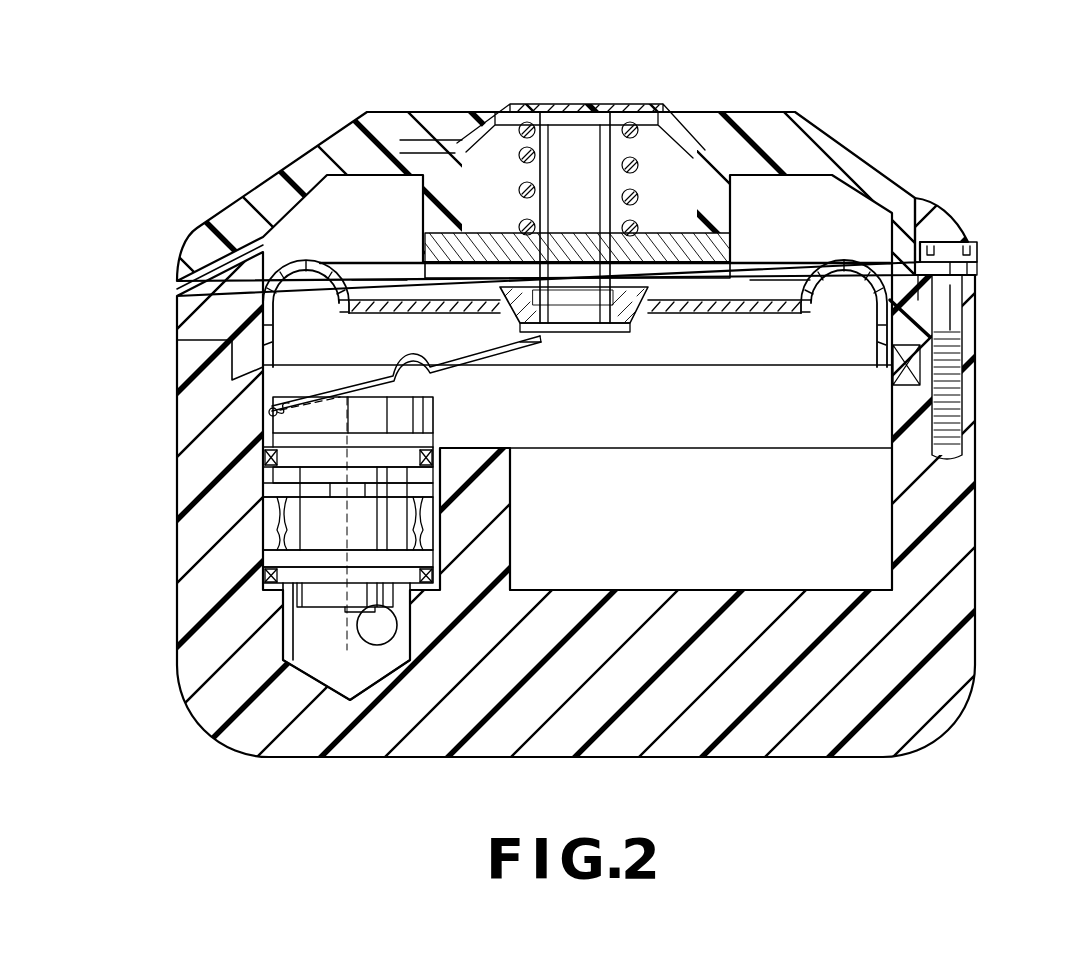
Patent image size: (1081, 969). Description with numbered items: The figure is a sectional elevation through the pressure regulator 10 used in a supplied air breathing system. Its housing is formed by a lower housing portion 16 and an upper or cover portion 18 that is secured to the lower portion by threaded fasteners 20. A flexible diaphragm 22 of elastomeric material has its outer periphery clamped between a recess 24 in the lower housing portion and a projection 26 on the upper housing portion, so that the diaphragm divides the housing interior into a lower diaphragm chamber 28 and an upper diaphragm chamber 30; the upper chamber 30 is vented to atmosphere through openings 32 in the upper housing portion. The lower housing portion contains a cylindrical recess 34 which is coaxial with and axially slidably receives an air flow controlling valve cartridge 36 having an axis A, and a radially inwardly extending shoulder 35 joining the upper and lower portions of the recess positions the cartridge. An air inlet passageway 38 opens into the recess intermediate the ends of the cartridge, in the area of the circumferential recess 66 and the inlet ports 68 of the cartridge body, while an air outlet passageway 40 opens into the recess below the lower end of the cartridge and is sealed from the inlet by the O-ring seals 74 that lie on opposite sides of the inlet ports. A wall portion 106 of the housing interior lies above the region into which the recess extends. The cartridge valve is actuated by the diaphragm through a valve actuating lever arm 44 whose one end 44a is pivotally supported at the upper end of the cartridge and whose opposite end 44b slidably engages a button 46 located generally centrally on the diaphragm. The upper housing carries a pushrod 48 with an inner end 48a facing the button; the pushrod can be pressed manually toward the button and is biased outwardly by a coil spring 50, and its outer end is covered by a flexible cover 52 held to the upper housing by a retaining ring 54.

The pressure regulator 10 is at (948, 128).
The lower housing portion 16 is at (168, 650).
The upper or cover portion 18 is at (210, 185).
The threaded fasteners 20 is at (975, 243).
The flexible diaphragm 22 is at (762, 255).
The recess 24 is at (905, 368).
The projection 26 is at (932, 330).
The lower diaphragm chamber 28 is at (826, 531).
The upper diaphragm chamber 30 is at (330, 198).
The openings 32 is at (190, 294).
The cylindrical recess 34 is at (263, 500).
The shoulder 35 is at (285, 585).
The valve cartridge 36 is at (318, 628).
The air inlet passageway 38 is at (293, 540).
The air outlet passageway 40 is at (380, 628).
The valve actuating lever arm 44 is at (372, 385).
The end of lever arm 44a is at (283, 398).
The opposite end of lever arm 44b is at (531, 345).
The button 46 is at (612, 330).
The pushrod 48 is at (592, 148).
The inner end of pushrod 48a is at (568, 250).
The coil spring 50 is at (518, 150).
The cover 52 is at (578, 104).
The retaining ring 54 is at (428, 120).
The circumferential recess 66 is at (433, 582).
The inlet ports 68 is at (267, 523).
The O-ring seals 74 is at (293, 556).
The wall portion 106 is at (493, 447).
The axis A is at (417, 447).